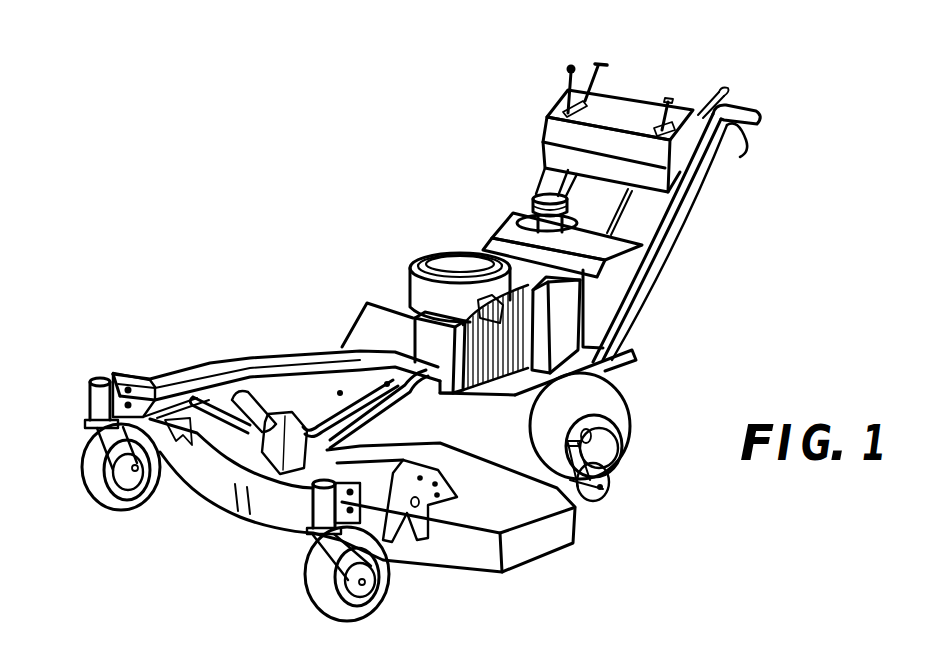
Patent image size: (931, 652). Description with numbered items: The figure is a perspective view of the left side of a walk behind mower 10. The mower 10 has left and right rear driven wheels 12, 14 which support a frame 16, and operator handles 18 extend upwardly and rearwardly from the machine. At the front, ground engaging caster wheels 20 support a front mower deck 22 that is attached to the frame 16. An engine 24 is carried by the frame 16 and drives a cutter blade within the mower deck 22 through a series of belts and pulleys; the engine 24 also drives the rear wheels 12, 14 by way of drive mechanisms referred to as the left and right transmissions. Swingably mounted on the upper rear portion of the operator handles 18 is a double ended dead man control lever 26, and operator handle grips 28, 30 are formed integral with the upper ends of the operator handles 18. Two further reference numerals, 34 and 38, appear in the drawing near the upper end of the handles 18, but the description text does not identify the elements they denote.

The walk behind mower 10 is at (295, 128).
The left rear driven wheel 12 is at (631, 407).
The right rear driven wheel 14 is at (370, 302).
The frame 16 is at (636, 357).
The operator handles 18 is at (541, 175).
The front ground engaging caster wheels 20 is at (86, 462).
The front mower deck 22 is at (564, 543).
The engine 24 is at (459, 247).
The double ended dead man control lever 26 is at (605, 60).
The operator handle grip 28 is at (605, 92).
The operator handle grip 30 is at (757, 112).
The control lever 34 is at (739, 155).
The control rod 38 is at (698, 184).